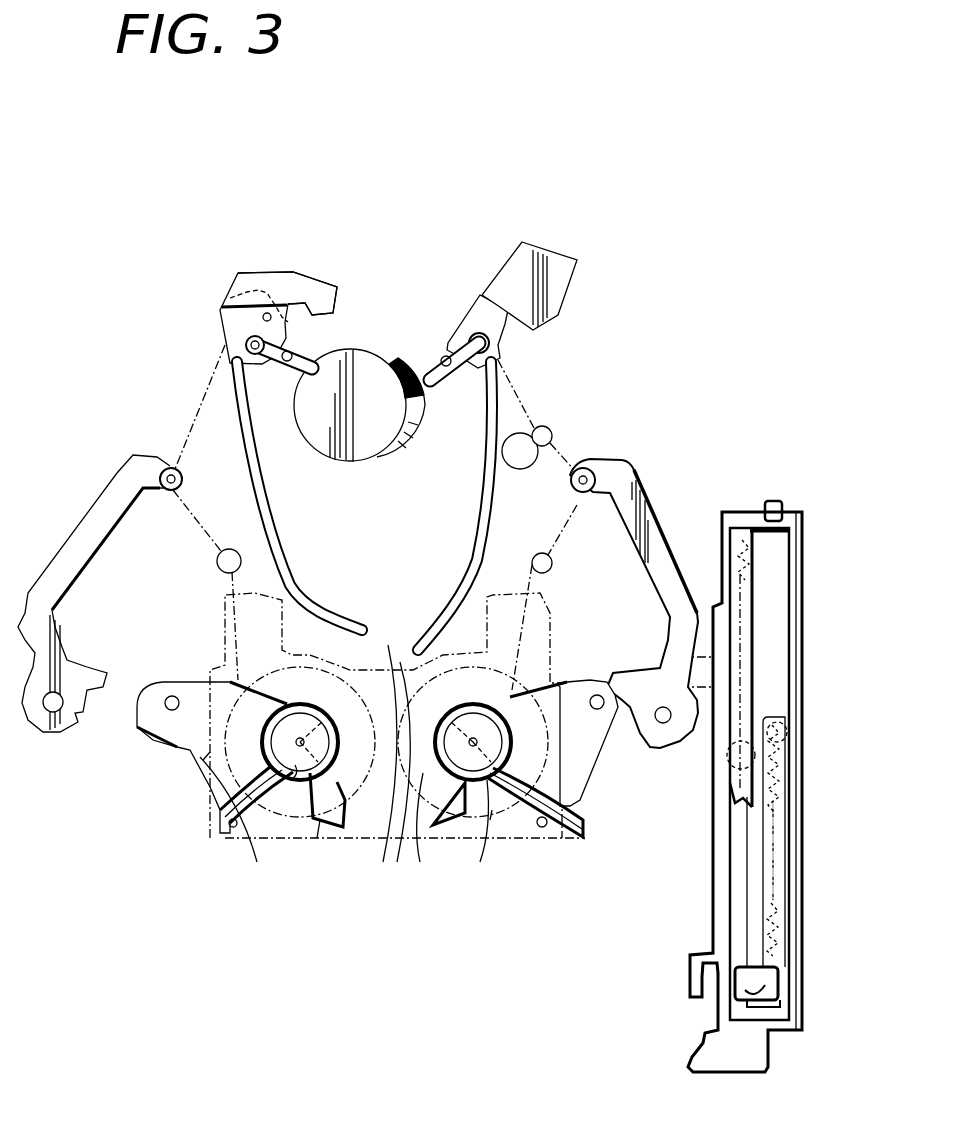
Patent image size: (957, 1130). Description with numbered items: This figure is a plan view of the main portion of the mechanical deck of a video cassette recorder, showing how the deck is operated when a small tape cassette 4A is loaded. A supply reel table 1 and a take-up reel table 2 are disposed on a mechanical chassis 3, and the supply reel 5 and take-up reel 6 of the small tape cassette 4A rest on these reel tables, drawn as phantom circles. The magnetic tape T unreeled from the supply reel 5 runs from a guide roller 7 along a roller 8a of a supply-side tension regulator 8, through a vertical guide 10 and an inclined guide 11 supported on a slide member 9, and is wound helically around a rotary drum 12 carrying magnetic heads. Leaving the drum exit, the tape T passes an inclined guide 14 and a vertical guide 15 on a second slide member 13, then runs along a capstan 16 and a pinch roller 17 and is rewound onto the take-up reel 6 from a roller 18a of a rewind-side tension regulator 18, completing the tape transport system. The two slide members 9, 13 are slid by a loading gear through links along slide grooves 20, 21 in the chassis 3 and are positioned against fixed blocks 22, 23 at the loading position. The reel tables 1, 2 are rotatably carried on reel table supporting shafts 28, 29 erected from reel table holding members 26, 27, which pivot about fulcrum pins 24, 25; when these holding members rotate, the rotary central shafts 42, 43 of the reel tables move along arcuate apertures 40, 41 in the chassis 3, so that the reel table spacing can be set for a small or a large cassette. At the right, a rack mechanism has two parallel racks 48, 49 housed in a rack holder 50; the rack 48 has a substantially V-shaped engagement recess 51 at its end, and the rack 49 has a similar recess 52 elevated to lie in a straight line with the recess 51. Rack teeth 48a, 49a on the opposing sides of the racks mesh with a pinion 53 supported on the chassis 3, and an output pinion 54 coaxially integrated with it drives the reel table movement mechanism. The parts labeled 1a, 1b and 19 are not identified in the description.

The supply reel table 1 is at (217, 793).
The supply reel shaft 1a is at (292, 730).
The take-up reel shaft 1b is at (468, 742).
The take-up reel table 2 is at (418, 838).
The mechanical chassis 3 is at (452, 990).
The small tape cassette 4A is at (317, 840).
The supply reel 5 is at (203, 757).
The take-up reel 6 is at (387, 840).
The guide roller 7 is at (217, 560).
The tension regulator 8 is at (87, 523).
The roller 8a is at (183, 480).
The slide member 9 is at (230, 333).
The vertical guide 10 is at (300, 340).
The inclined guide 11 is at (310, 368).
The rotary drum 12 is at (387, 461).
The slide member 13 is at (477, 297).
The inclined guide 14 is at (437, 383).
The vertical guide 15 is at (467, 330).
The capstan 16 is at (548, 428).
The pinch roller 17 is at (516, 470).
The tension regulator 18 is at (648, 488).
The roller 18a is at (575, 500).
The guide roller 19 is at (550, 568).
The slide groove 20 is at (282, 545).
The slide groove 21 is at (467, 577).
The fixed block 22 is at (312, 282).
The fixed block 23 is at (563, 253).
The fulcrum pin 24 is at (143, 723).
The fulcrum pin 25 is at (594, 682).
The reel table holding member 26 is at (190, 750).
The reel table holding member 27 is at (597, 763).
The reel table supporting shaft 28 is at (295, 765).
The reel table supporting shaft 29 is at (490, 820).
The arcuate aperture 40 is at (227, 853).
The arcuate aperture 41 is at (547, 837).
The rotary central shaft 42 is at (343, 668).
The rotary central shaft 43 is at (460, 712).
The rack 48 is at (730, 593).
The rack teeth 48a is at (757, 578).
The rack 49 is at (783, 872).
The rack teeth 49a is at (775, 925).
The rack holder 50 is at (805, 657).
The engagement recess 51 is at (747, 800).
The engagement recess 52 is at (777, 983).
The pinion 53 is at (753, 760).
The output pinion 54 is at (763, 720).
The magnetic tape T is at (510, 377).